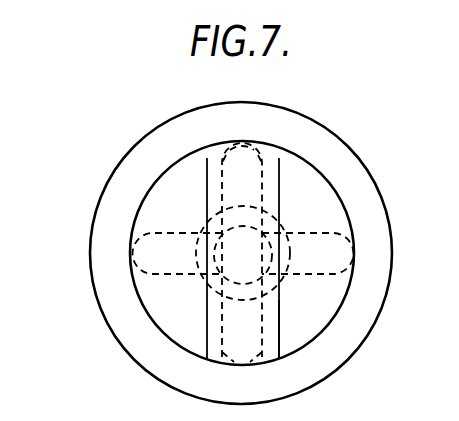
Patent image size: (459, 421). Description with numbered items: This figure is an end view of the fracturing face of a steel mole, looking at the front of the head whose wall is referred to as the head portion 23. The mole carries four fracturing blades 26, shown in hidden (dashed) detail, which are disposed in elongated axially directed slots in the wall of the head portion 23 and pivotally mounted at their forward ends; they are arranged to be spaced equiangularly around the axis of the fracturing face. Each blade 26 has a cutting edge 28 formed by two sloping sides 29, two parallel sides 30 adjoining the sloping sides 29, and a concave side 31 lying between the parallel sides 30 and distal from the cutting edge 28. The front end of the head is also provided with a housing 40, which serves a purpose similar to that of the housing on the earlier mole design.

The body portion 23 is at (392, 231).
The fracturing blades 26 is at (223, 173).
The cutting edge 28 is at (239, 142).
The sloping sides 29 is at (237, 142).
The parallel sides 30 is at (222, 178).
The concave side 31 is at (233, 222).
The housing 40 is at (279, 330).